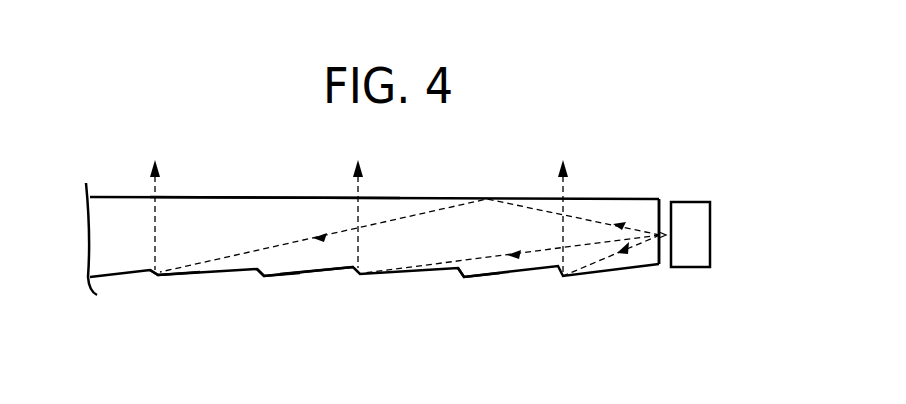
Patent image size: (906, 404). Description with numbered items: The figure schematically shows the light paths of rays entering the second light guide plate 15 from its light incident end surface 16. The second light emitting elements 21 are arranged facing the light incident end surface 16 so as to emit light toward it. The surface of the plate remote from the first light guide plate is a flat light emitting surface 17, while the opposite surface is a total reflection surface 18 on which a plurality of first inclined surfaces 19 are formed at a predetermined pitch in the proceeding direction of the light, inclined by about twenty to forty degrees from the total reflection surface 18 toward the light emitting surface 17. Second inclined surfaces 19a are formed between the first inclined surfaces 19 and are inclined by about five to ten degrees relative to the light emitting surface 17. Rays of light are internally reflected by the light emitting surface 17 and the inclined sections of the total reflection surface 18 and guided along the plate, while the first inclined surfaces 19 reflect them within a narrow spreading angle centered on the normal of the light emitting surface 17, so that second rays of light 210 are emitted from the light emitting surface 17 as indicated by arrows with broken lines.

The second light guide plate 15 is at (98, 246).
The light incident end surface 16 is at (662, 206).
The light emitting surface 17 is at (262, 197).
The total reflection surface 18 is at (173, 277).
The first inclined surfaces 19 is at (257, 272).
The second inclined surfaces 19a is at (330, 271).
The second light emitting elements 21 is at (692, 240).
The second rays of light 210 is at (158, 193).